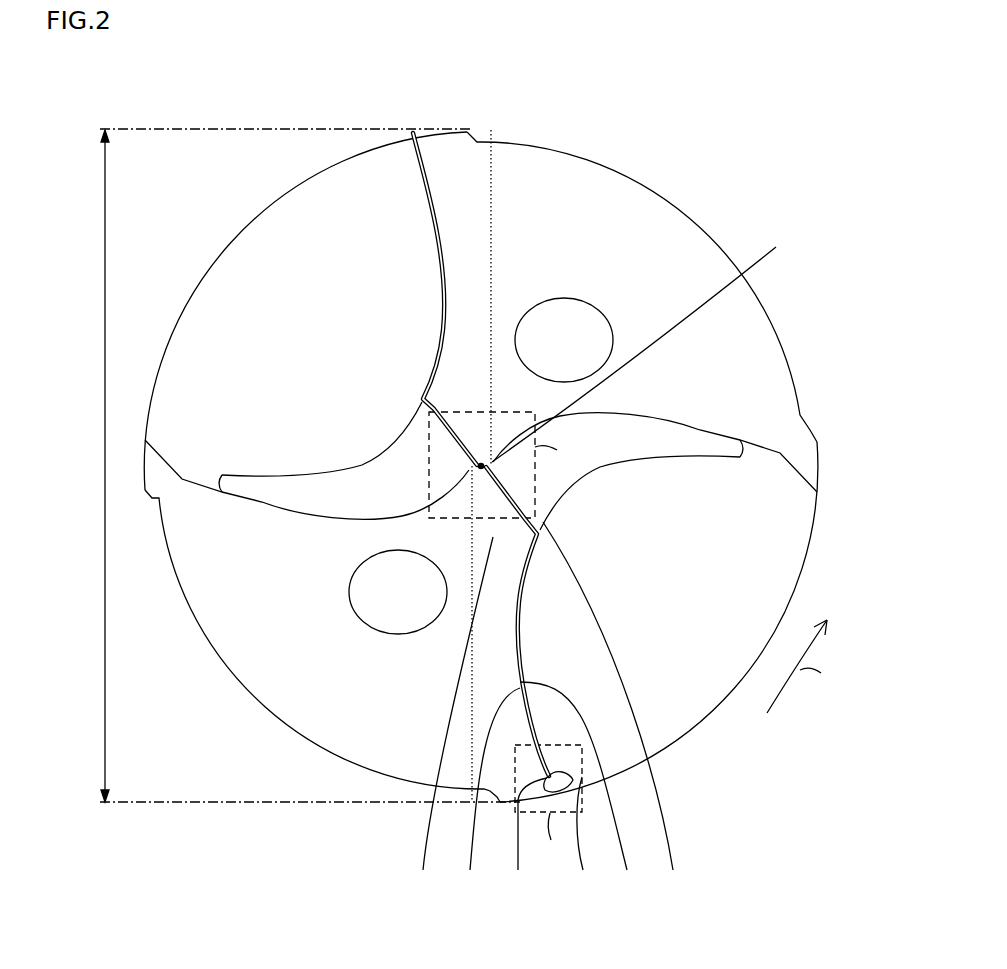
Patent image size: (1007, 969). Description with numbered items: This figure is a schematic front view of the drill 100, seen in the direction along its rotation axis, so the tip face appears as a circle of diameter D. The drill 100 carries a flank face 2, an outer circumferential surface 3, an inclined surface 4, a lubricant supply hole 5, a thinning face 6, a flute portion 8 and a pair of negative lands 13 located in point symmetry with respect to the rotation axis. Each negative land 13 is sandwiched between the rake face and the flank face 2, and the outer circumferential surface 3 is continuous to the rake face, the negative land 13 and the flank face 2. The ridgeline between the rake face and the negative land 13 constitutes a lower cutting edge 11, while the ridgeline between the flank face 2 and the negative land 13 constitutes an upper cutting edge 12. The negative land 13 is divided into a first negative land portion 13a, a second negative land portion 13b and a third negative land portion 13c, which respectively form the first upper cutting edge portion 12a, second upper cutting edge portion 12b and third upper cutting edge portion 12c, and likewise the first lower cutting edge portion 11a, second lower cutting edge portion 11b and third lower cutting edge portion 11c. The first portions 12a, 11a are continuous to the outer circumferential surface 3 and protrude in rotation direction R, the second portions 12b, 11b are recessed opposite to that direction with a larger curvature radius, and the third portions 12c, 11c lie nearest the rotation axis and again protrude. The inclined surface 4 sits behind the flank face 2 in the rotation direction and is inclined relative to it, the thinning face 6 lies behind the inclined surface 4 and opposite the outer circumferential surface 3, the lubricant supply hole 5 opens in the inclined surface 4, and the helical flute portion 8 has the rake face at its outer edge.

The drill 100 is at (741, 107).
The flank face 2 is at (458, 173).
The outer circumferential surface 3 is at (503, 797).
The inclined surface 4 is at (640, 252).
The lubricant supply hole 5 is at (585, 302).
The thinning face 6 is at (350, 487).
The flute portion 8 is at (240, 273).
The lower cutting edge 11 is at (703, 893).
The first lower cutting edge portion 11a is at (582, 836).
The second lower cutting edge portion 11b is at (585, 789).
The third lower cutting edge portion 11c is at (619, 709).
The upper cutting edge 12 is at (545, 893).
The first upper cutting edge portion 12a is at (523, 837).
The second upper cutting edge portion 12b is at (486, 792).
The third upper cutting edge portion 12c is at (450, 716).
The negative land 13 is at (420, 170).
The first negative land portion 13a is at (575, 785).
The second negative land portion 13b is at (520, 668).
The third negative land portion 13c is at (540, 527).